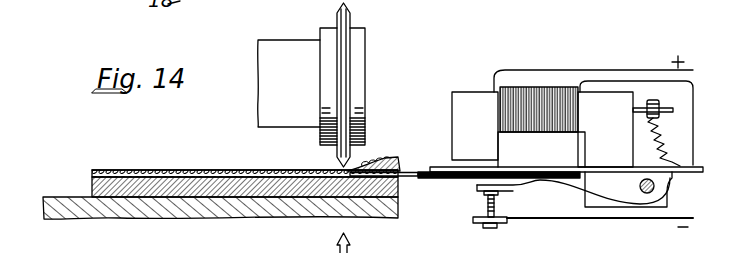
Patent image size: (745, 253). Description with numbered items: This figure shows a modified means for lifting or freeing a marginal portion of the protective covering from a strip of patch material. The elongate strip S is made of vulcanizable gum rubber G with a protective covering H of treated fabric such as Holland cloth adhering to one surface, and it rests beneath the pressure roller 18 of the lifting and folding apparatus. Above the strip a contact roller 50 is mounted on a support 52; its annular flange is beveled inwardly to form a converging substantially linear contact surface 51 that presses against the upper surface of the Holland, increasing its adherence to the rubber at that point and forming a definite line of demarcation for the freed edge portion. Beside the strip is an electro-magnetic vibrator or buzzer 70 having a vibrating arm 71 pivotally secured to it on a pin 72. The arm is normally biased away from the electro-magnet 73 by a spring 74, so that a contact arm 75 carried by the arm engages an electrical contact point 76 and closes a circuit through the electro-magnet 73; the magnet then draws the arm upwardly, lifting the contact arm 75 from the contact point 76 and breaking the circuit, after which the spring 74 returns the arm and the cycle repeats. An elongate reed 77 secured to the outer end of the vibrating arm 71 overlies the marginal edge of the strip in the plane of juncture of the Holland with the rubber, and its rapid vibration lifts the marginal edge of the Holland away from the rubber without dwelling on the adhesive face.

The pressure roller 18 is at (192, 208).
The vulcanizable gum rubber G is at (90, 185).
The elongate strip S is at (117, 167).
The protective covering H is at (173, 168).
The contact roller 50 is at (352, 80).
The contact surface 51 is at (343, 52).
The support 52 is at (265, 62).
The electro-magnetic vibrator 70 is at (474, 97).
The vibrating arm 71 is at (437, 180).
The pin 72 is at (647, 193).
The electro-magnet 73 is at (569, 122).
The spring 74 is at (653, 147).
The contact arm 75 is at (513, 191).
The electrical contact point 76 is at (477, 195).
The reed 77 is at (427, 154).